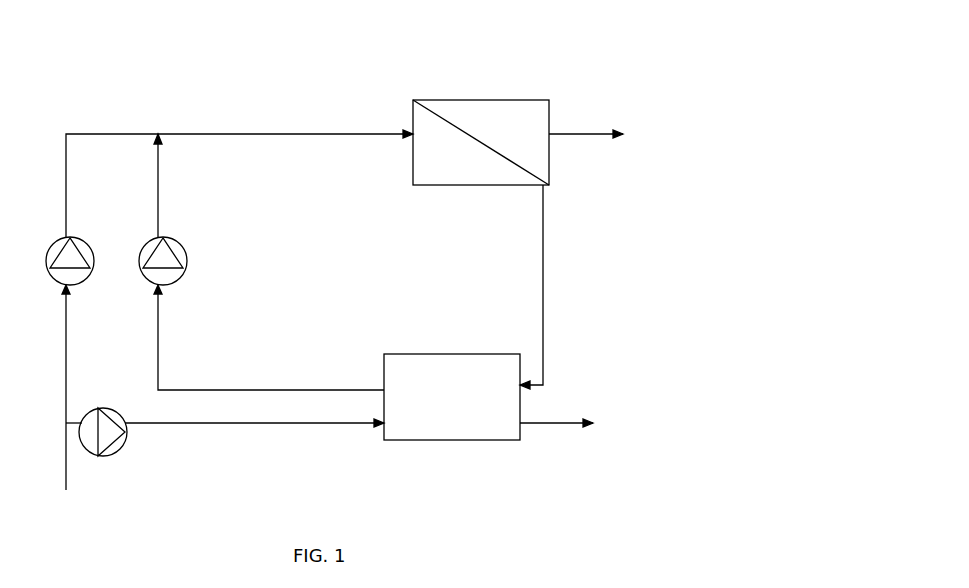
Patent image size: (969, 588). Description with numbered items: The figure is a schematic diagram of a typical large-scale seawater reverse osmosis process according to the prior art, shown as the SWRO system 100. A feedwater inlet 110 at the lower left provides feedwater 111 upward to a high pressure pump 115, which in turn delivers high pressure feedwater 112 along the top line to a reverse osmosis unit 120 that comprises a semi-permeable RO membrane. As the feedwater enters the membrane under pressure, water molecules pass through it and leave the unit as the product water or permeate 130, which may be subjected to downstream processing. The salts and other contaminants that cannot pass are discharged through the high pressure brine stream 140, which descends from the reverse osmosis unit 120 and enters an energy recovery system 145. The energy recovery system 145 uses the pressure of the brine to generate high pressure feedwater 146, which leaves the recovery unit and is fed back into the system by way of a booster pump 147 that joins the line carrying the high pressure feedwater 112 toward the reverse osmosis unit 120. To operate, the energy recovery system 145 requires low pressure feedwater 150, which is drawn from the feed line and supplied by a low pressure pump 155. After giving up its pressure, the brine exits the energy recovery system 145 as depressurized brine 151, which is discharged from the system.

The SWRO system 100 is at (313, 281).
The feedwater inlet 110 is at (67, 470).
The feedwater 111 is at (46, 354).
The high pressure feedwater 112 is at (239, 167).
The high pressure pump 115 is at (48, 261).
The reverse osmosis unit 120 is at (481, 142).
The permeate 130 is at (586, 148).
The high pressure brine stream 140 is at (555, 287).
The energy recovery system 145 is at (452, 397).
The high pressure feedwater 146 is at (269, 337).
The booster pump 147 is at (181, 209).
The low pressure feedwater 150 is at (254, 438).
The depressurized brine 151 is at (556, 438).
The low pressure pump 155 is at (96, 419).